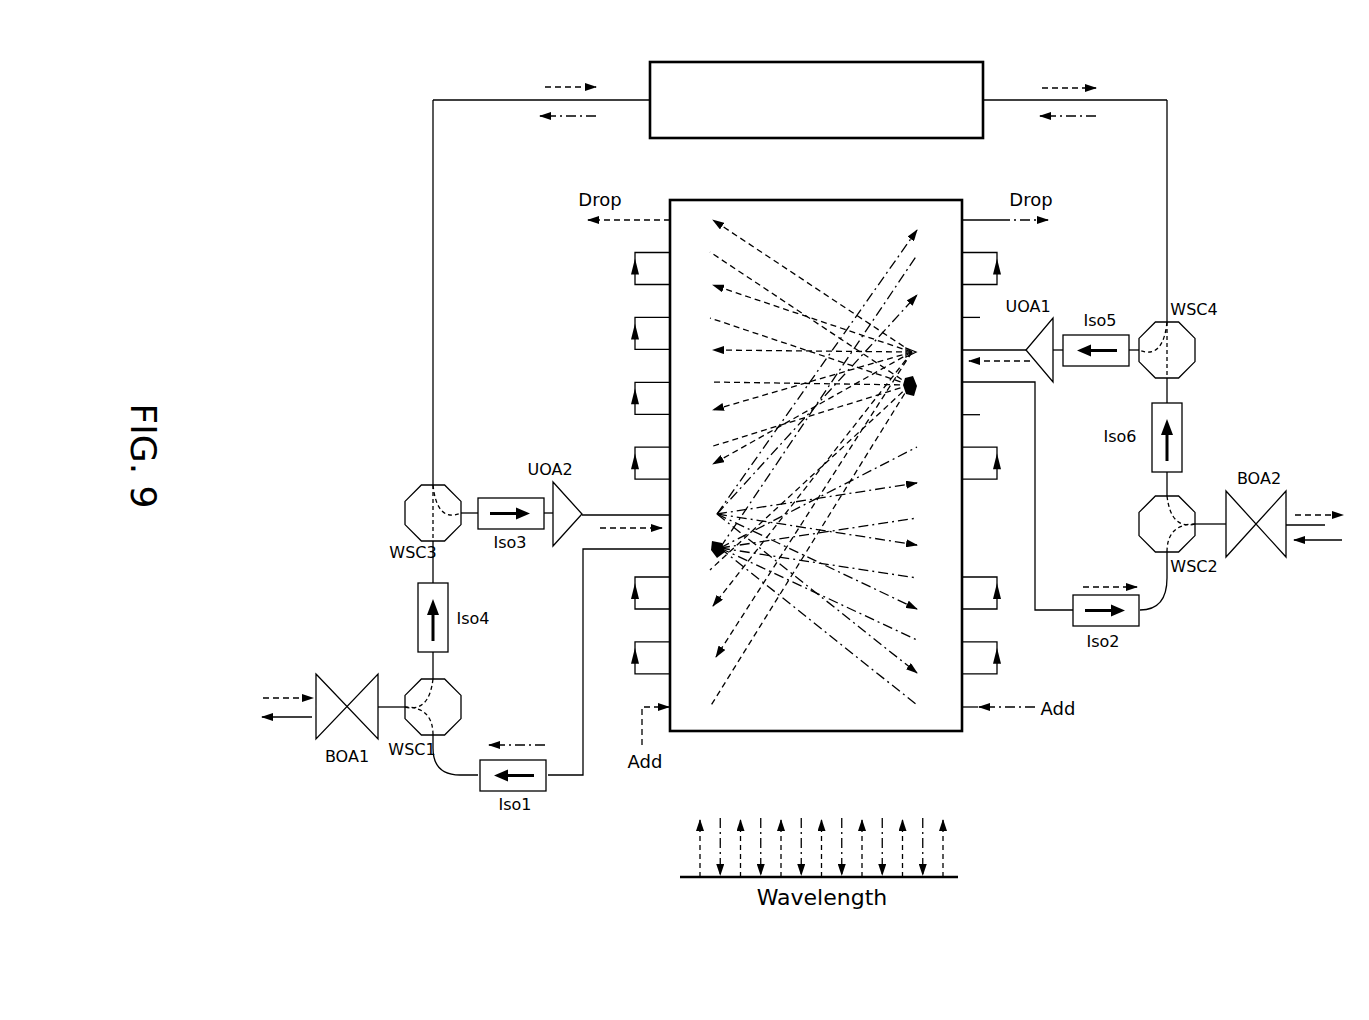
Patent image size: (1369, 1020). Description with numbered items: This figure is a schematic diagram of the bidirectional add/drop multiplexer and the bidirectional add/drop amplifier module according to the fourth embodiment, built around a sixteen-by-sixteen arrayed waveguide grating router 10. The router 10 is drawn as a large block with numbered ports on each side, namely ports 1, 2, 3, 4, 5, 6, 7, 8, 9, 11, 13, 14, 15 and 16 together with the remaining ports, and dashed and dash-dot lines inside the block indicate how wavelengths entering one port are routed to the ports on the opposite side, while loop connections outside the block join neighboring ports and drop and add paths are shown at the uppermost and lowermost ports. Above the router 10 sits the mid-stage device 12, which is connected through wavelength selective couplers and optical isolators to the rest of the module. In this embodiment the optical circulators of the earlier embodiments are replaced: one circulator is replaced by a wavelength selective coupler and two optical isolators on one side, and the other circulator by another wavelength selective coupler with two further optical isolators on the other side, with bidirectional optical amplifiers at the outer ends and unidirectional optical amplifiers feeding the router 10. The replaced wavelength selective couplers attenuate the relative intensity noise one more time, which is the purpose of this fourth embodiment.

The arrayed waveguide grating router 10 is at (818, 200).
The mid-stage device 12 is at (858, 62).
The switch port 1 is at (818, 363).
The switch port 2 is at (816, 396).
The switch port 3 is at (817, 396).
The switch port 4 is at (805, 347).
The switch port 5 is at (861, 352).
The switch port 6 is at (852, 492).
The switch port 7 is at (836, 388).
The switch port 8 is at (816, 466).
The switch port 9 is at (817, 433).
The switch port 11 is at (748, 644).
The switch port 13 is at (817, 485).
The switch port 14 is at (816, 611).
The switch port 15 is at (817, 518).
The switch port 16 is at (838, 565).